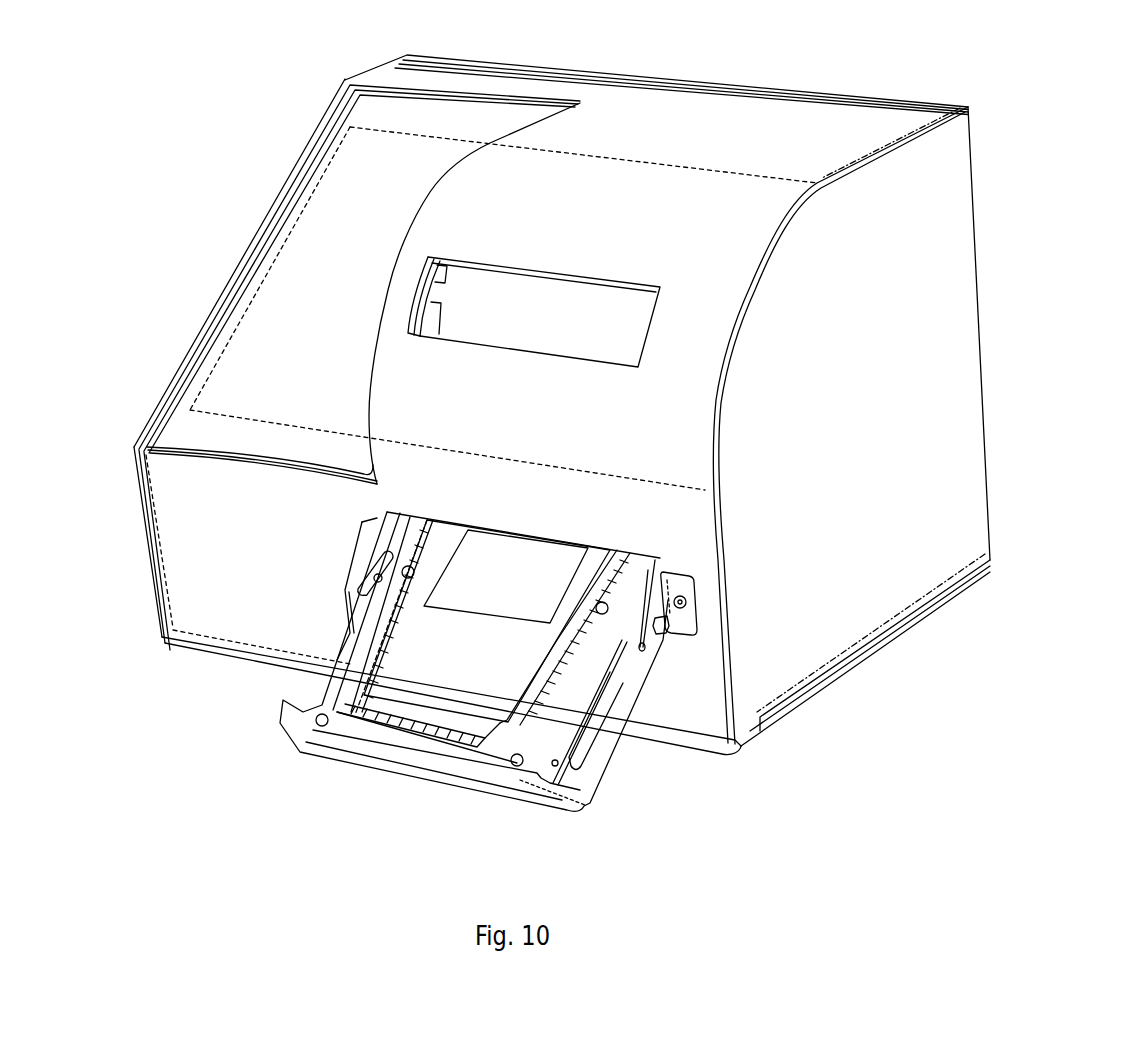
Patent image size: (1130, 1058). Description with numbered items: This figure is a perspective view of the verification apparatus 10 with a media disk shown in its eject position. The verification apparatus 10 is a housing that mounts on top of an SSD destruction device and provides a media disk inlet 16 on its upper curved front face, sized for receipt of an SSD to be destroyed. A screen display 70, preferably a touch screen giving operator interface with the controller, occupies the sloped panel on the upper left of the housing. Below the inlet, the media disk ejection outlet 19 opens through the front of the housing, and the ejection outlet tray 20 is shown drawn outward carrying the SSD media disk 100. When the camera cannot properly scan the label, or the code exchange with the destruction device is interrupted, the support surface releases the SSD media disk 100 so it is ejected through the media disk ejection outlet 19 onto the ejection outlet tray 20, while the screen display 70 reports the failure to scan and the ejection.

The verification apparatus 10 is at (602, 393).
The screen display 70 is at (277, 337).
The media disk inlet 16 is at (640, 333).
The media disk ejection outlet 19 is at (660, 558).
The ejection outlet tray 20 is at (588, 802).
The SSD media disk 100 is at (575, 712).